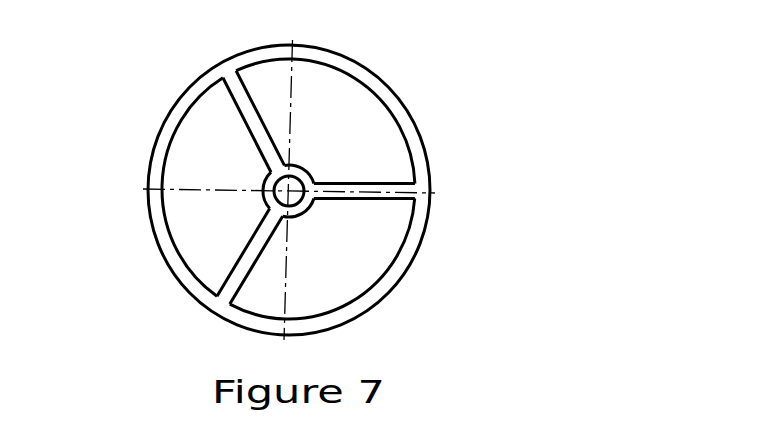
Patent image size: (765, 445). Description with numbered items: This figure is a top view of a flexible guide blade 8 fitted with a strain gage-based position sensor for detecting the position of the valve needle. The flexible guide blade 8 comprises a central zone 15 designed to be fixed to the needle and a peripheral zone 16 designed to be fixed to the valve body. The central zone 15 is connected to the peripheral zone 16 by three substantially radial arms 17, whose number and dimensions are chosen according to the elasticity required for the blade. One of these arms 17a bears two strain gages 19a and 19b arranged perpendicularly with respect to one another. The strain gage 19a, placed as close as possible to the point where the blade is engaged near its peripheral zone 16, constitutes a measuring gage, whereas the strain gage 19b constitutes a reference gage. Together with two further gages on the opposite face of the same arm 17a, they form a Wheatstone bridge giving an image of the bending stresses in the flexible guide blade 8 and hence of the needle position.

The flexible guide blade 8 is at (557, 76).
The central zone 15 is at (311, 203).
The peripheral zone 16 is at (160, 205).
The radial arms 17 is at (238, 111).
The arm 17a is at (367, 178).
The strain gage 19a is at (412, 177).
The strain gage 19b is at (398, 205).